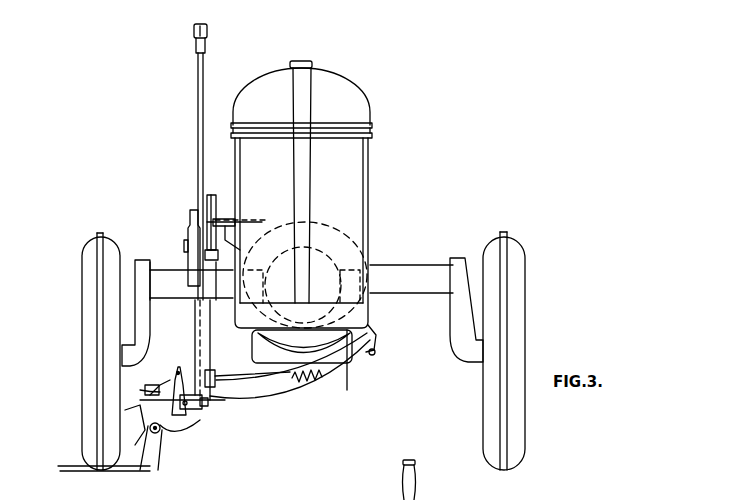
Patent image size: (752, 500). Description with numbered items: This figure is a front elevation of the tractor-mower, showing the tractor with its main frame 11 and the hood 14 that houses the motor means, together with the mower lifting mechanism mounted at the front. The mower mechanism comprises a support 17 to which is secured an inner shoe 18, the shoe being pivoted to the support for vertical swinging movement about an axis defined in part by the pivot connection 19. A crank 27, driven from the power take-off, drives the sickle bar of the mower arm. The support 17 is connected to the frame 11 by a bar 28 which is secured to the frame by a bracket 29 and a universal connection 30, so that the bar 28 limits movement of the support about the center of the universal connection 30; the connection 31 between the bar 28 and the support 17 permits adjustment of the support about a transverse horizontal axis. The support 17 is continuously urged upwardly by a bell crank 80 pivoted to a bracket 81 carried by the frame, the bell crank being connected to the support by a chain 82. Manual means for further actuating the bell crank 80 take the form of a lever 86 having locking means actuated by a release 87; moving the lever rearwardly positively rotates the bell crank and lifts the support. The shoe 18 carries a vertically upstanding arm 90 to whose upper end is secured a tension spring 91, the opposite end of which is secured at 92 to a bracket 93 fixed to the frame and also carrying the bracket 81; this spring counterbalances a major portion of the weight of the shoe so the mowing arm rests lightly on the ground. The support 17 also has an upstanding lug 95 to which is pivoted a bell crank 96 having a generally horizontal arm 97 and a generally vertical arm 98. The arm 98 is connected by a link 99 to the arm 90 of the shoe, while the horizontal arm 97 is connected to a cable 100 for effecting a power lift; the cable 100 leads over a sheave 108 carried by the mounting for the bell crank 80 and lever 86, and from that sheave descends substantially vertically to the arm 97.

The hood 14 is at (366, 110).
The main frame 11 is at (372, 317).
The lever 86 is at (204, 80).
The release 87 is at (207, 40).
The bell crank 80 is at (192, 240).
The chain 82 is at (190, 300).
The sheave 108 is at (230, 247).
The cable 100 is at (195, 305).
The bracket 81 is at (214, 322).
The upstanding lug 95 is at (178, 367).
The bell crank 96 is at (172, 368).
The tension spring 91 is at (158, 388).
The horizontally extending arm 97 is at (222, 392).
The connection 31 is at (207, 407).
The vertically extending arm 98 is at (160, 392).
The arm 90 is at (130, 412).
The link 99 is at (110, 440).
The support 17 is at (162, 436).
The inner shoe 18 is at (142, 450).
The pivot connection 19 is at (162, 445).
The crank 27 is at (175, 432).
The bar 28 is at (262, 404).
The bracket 93 is at (250, 372).
The spring attachment 92 is at (352, 378).
The bracket 29 is at (372, 335).
The universal connection 30 is at (375, 352).